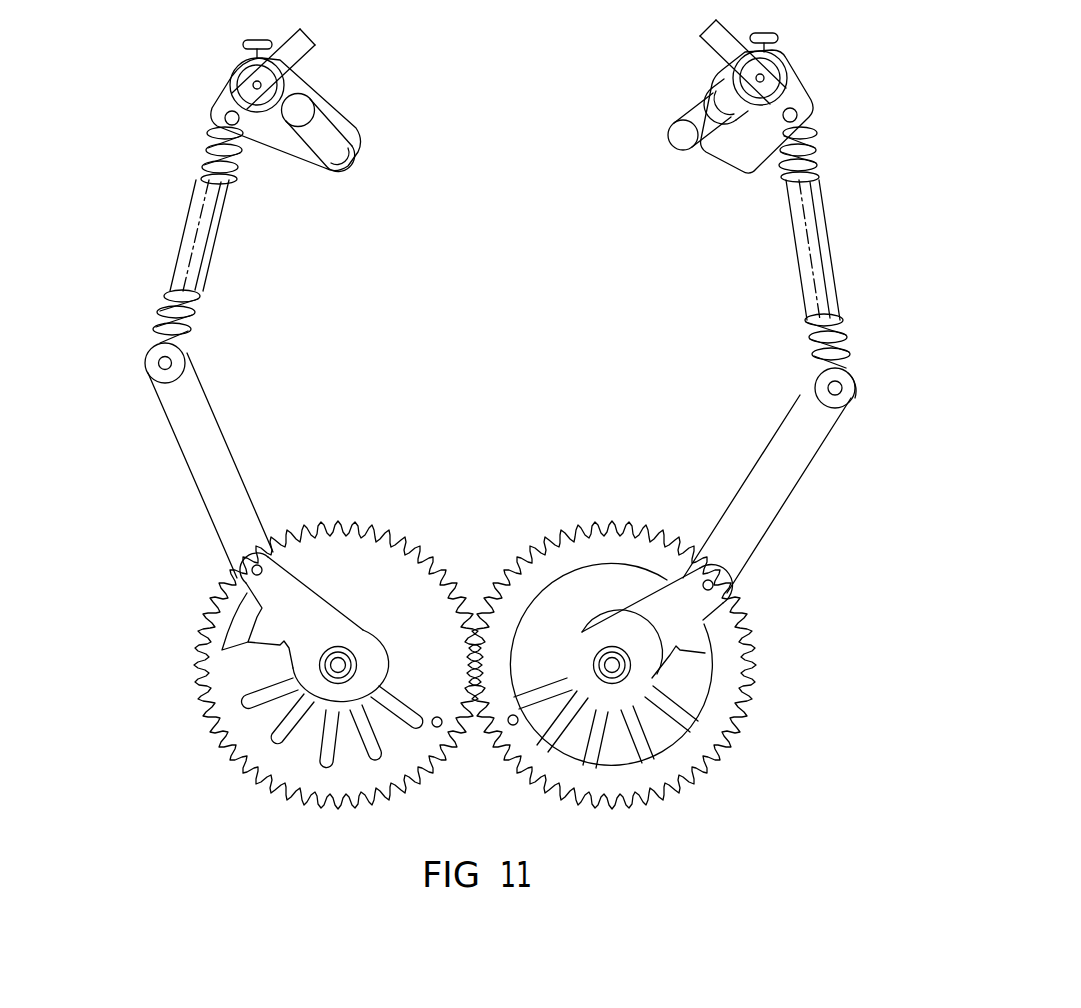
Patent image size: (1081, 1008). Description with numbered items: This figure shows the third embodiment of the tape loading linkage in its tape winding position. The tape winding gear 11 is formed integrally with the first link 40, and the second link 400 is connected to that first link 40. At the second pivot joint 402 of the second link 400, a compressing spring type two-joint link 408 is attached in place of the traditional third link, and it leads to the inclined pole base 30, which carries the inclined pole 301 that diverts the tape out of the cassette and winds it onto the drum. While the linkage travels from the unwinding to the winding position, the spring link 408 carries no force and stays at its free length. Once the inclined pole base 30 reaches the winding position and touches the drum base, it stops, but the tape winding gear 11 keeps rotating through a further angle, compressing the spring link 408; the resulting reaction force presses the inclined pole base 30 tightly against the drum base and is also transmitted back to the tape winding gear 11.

The tape winding gear 11 is at (713, 730).
The inclined pole base 30 is at (735, 160).
The inclined pole 301 is at (678, 133).
The first link 40 is at (652, 635).
The second link 400 is at (786, 485).
The second pivot joint 402 is at (858, 392).
The compressing spring type two-joint link 408 is at (845, 340).